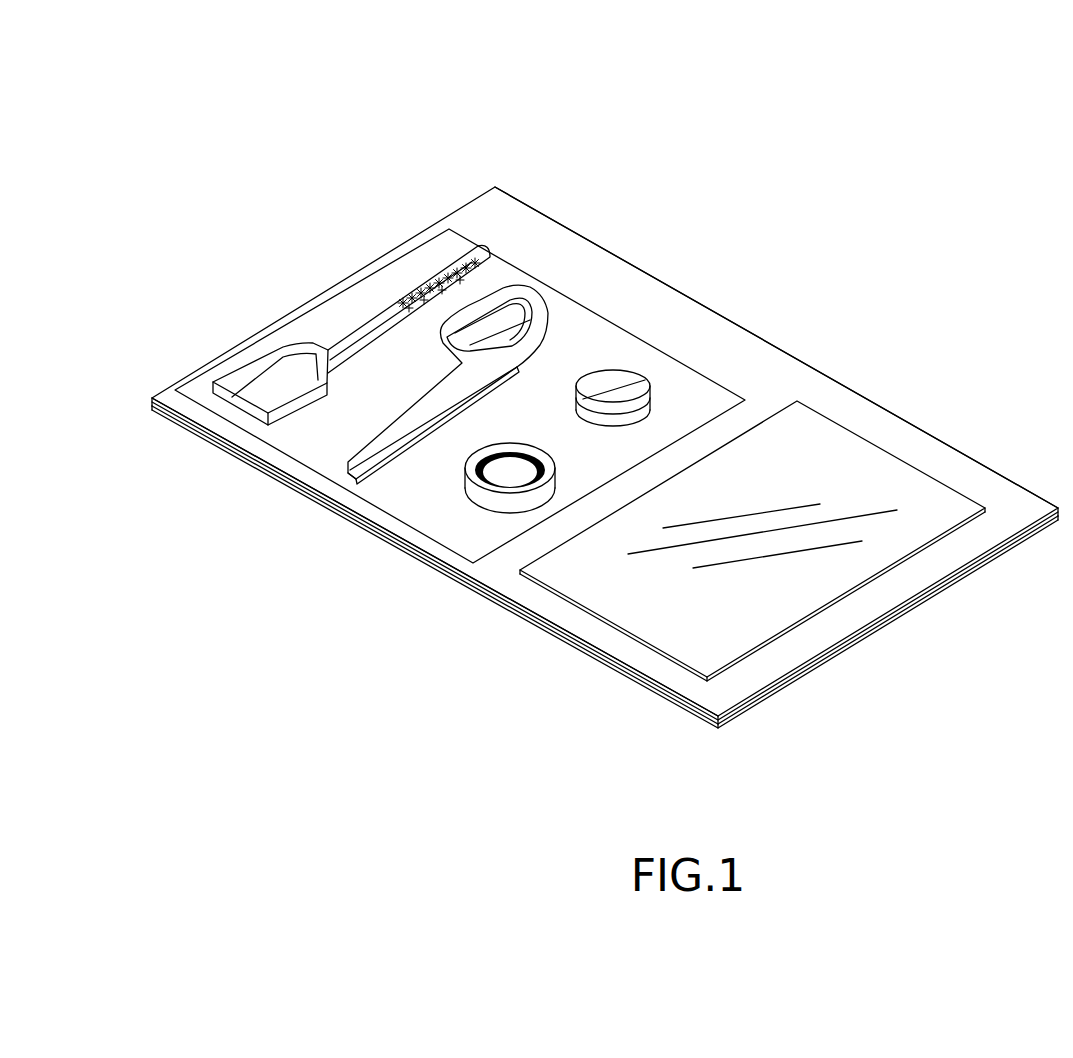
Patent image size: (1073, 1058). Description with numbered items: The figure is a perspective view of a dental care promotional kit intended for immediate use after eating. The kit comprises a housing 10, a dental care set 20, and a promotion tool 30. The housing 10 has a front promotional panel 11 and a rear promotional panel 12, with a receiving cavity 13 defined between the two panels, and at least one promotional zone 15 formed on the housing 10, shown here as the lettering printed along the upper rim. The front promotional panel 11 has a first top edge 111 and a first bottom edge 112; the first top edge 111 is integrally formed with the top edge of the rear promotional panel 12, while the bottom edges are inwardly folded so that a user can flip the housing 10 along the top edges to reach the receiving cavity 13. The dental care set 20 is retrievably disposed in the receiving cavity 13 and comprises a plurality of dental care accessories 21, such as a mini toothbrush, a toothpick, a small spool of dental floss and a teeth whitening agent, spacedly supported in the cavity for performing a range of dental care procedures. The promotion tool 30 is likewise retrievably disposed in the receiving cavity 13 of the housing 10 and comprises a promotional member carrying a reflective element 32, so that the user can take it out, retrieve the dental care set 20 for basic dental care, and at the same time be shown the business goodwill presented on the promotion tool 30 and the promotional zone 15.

The housing 10 is at (605, 416).
The front promotional panel 11 is at (598, 646).
The rear promotional panel 12 is at (821, 668).
The receiving cavity 13 is at (353, 258).
The promotional zone 15 is at (550, 209).
The dental care set 20 is at (690, 393).
The dental care accessories 21 is at (270, 385).
The promotion tool 30 is at (716, 281).
The reflective element 32 is at (873, 477).
The first top edge 111 is at (856, 376).
The first bottom edge 112 is at (414, 560).